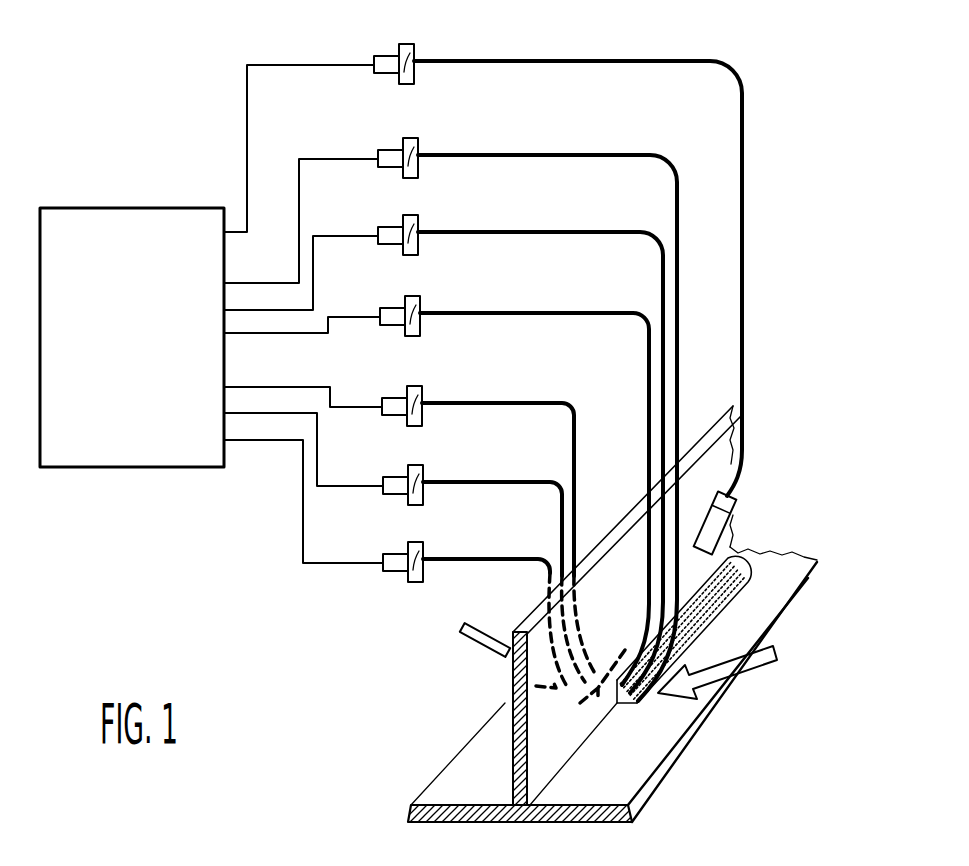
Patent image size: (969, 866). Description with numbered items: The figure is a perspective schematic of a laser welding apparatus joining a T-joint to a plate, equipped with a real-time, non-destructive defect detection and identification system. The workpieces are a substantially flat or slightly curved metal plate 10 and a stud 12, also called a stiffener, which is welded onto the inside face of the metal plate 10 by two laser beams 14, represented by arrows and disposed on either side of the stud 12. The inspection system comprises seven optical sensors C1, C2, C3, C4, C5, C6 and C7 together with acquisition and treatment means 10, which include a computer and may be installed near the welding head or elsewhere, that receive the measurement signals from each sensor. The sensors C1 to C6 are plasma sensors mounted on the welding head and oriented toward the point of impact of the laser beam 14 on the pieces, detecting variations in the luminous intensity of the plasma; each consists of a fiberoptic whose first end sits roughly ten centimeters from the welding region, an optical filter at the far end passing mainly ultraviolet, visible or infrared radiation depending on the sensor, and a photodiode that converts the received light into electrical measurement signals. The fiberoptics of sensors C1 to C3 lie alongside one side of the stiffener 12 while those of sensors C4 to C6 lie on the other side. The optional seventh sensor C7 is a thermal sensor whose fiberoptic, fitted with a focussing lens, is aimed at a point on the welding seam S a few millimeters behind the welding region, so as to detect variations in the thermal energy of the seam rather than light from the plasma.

The metal plate 10 is at (141, 216).
The stud 12 is at (517, 750).
The laser beams 14 is at (478, 642).
The welding seam S is at (763, 557).
The plasma sensor C1 is at (400, 551).
The plasma sensor C2 is at (400, 474).
The plasma sensor C3 is at (399, 395).
The plasma sensor C4 is at (397, 305).
The plasma sensor C5 is at (395, 224).
The plasma sensor C6 is at (395, 147).
The thermal sensor C7 is at (395, 53).